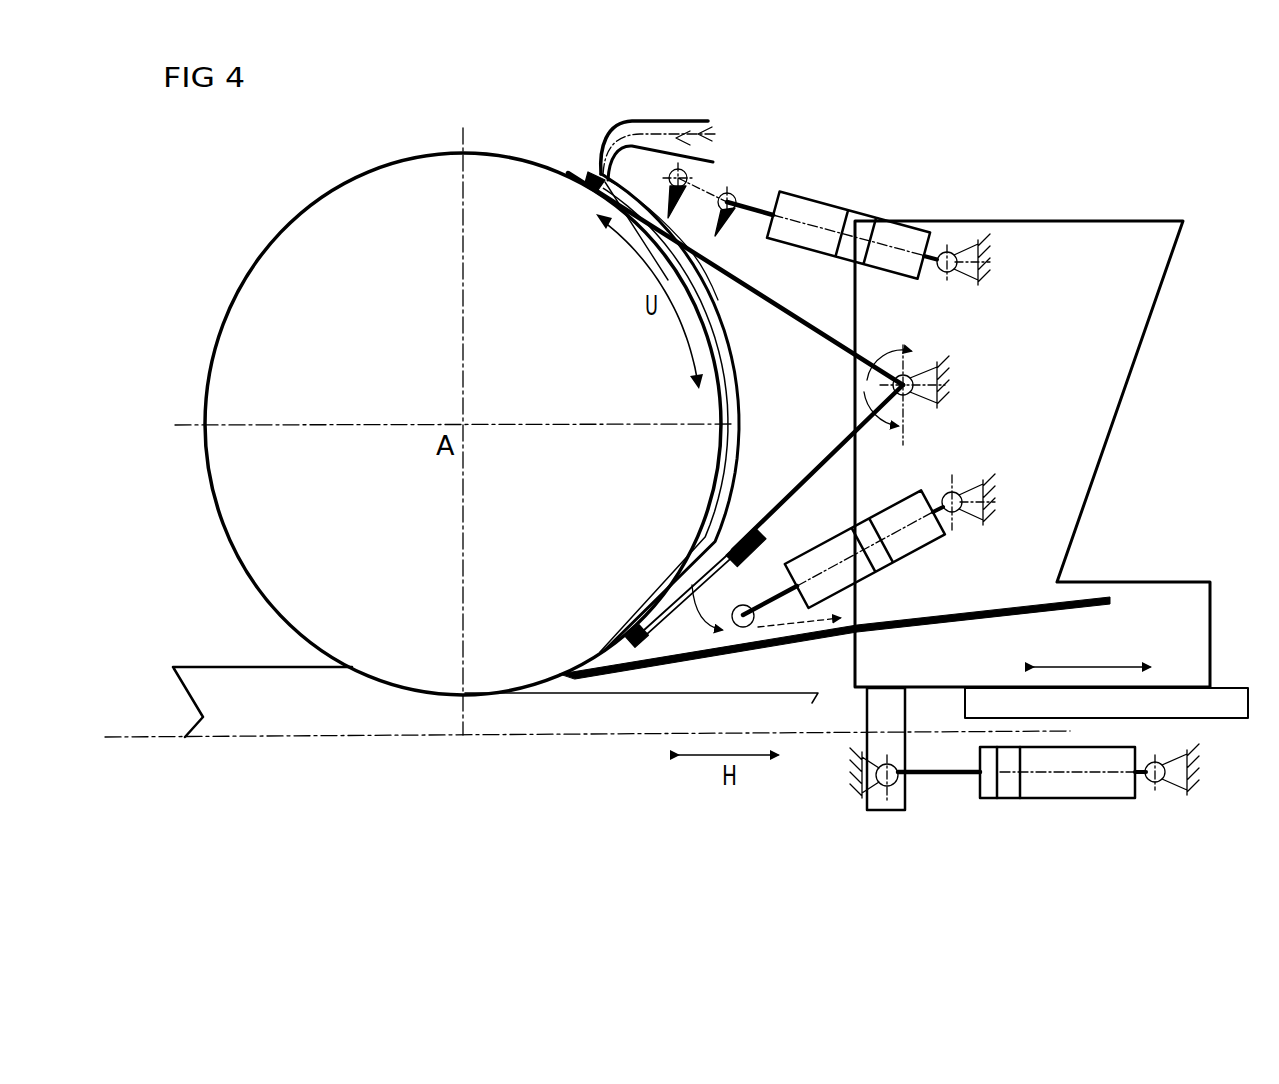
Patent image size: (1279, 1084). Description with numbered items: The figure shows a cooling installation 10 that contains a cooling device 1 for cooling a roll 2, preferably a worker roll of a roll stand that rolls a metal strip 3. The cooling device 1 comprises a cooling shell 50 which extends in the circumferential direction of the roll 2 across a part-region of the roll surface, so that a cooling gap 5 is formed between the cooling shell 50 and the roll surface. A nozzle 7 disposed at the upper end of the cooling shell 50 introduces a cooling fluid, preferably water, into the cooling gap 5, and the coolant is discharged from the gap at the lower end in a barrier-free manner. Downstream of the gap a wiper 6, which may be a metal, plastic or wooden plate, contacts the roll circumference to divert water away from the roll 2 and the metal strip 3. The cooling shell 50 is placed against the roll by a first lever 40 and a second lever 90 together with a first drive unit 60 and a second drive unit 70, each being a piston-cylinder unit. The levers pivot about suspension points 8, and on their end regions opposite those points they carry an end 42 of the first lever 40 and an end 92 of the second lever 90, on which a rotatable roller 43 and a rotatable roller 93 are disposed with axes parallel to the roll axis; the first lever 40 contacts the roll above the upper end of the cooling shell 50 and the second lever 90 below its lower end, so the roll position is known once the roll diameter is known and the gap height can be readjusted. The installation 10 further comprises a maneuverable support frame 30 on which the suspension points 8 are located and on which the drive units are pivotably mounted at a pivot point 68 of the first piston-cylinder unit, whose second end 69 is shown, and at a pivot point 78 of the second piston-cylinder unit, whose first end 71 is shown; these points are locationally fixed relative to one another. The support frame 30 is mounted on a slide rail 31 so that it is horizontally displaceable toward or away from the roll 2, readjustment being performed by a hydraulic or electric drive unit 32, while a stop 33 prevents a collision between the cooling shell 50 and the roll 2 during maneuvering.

The cooling device 1 is at (780, 156).
The roll 2 is at (300, 208).
The metal strip 3 is at (262, 666).
The cooling gap 5 is at (720, 440).
The wiper 6 is at (830, 640).
The nozzle 7 is at (675, 120).
The suspension points of the levers 8 is at (937, 386).
The cooling installation 10 is at (1046, 195).
The support frame 30 is at (1090, 365).
The slide rail 31 is at (1237, 720).
The drive unit 32 is at (996, 800).
The stop 33 is at (858, 798).
The first lever 40 is at (793, 312).
The end of the first lever 42 is at (594, 208).
The roller on the end of the first lever 43 is at (592, 170).
The cooling shell 50 is at (727, 495).
The first drive unit 60 is at (862, 205).
The pivot point of the first piston-cylinder unit 68 is at (985, 268).
The second end of the first piston-cylinder unit 69 is at (946, 248).
The second drive unit 70 is at (870, 590).
The first end of the second piston-cylinder unit 71 is at (942, 525).
The pivot point of the second piston-cylinder unit 78 is at (990, 503).
The second lever 90 is at (770, 520).
The end of the second lever 92 is at (632, 627).
The roller on the end of the second lever 93 is at (610, 647).